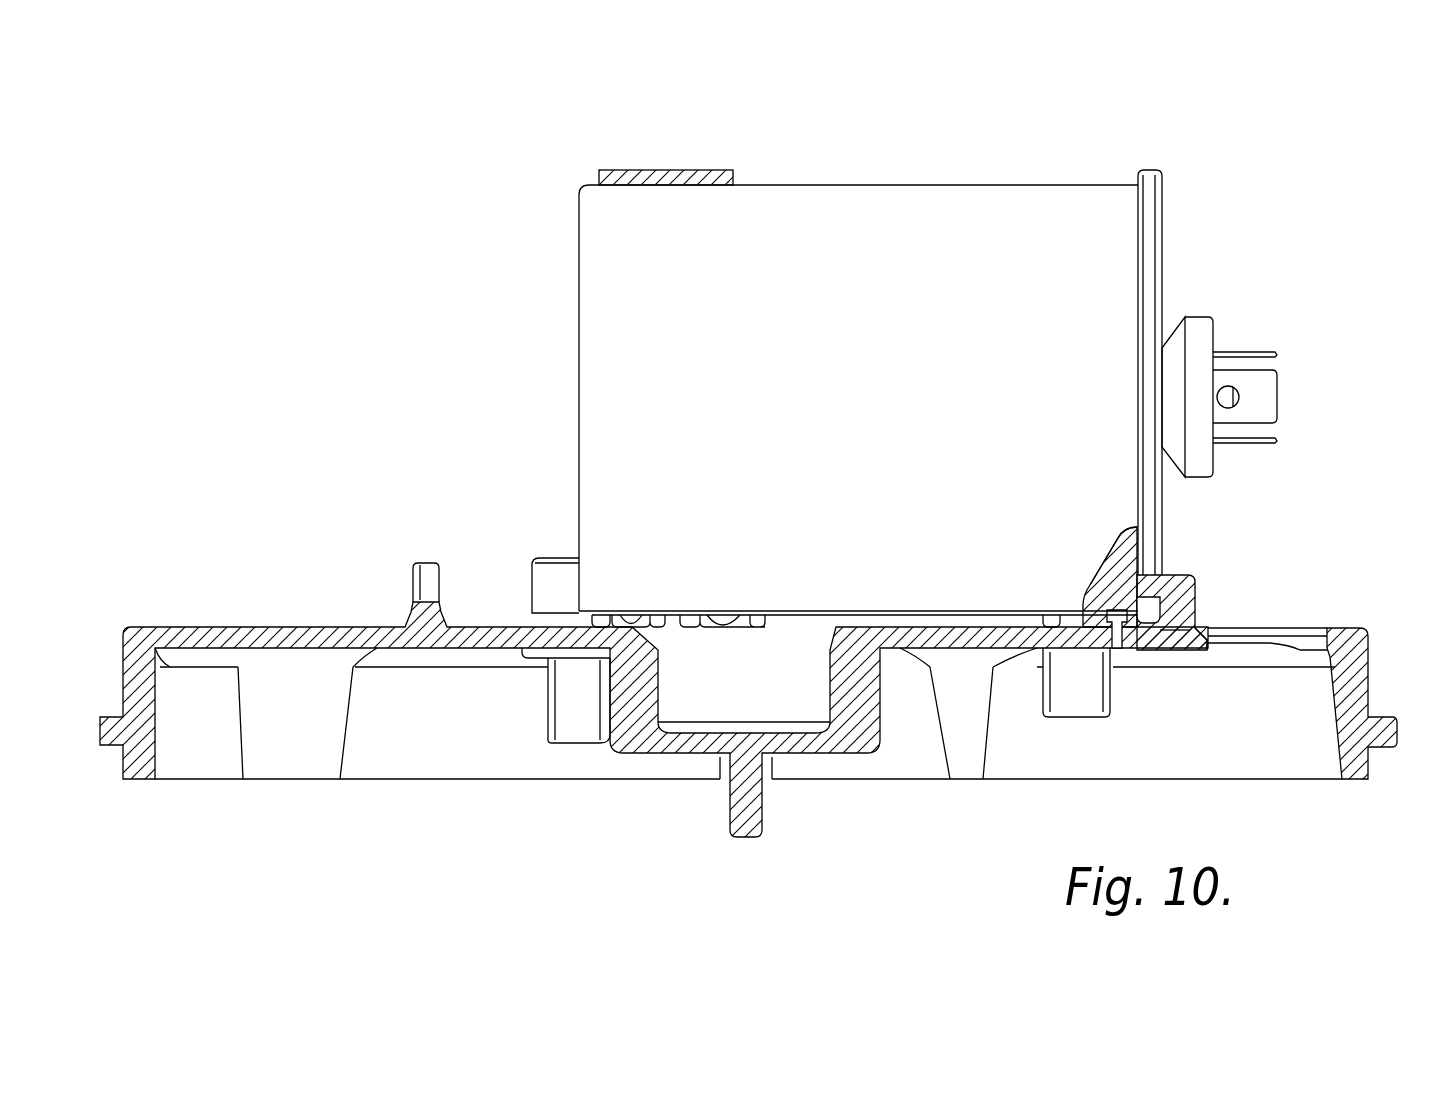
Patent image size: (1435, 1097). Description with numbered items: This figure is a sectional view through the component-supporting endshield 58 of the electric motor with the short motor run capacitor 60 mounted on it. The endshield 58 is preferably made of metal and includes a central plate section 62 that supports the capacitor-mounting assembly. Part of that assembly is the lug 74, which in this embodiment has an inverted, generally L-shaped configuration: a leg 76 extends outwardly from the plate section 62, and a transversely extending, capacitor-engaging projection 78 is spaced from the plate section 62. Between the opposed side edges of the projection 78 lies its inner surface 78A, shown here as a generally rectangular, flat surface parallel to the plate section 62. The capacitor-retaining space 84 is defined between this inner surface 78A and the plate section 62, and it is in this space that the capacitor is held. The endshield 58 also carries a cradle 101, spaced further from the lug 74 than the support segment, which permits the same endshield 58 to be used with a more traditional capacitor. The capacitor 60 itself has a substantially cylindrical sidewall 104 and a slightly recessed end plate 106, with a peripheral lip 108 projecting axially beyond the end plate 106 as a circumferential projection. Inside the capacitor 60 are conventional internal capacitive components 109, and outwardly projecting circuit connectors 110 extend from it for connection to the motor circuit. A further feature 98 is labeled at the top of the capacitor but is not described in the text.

The component-supporting endshield 58 is at (766, 662).
The capacitor 60 is at (974, 353).
The central plate section 62 is at (1335, 632).
The lug 74 is at (1169, 615).
The leg 76 is at (1195, 625).
The capacitor-engaging projection 78 is at (1170, 580).
The inner surface 78A is at (1150, 612).
The capacitor-retaining space 84 is at (1168, 625).
The relay top tab 98 is at (690, 180).
The cradle 101 is at (432, 598).
The cylindrical sidewall 104 is at (890, 225).
The end plate 106 is at (1145, 545).
The peripheral lip 108 is at (1198, 612).
The internal capacitive components 109 is at (1103, 562).
The circuit connectors 110 is at (1300, 356).